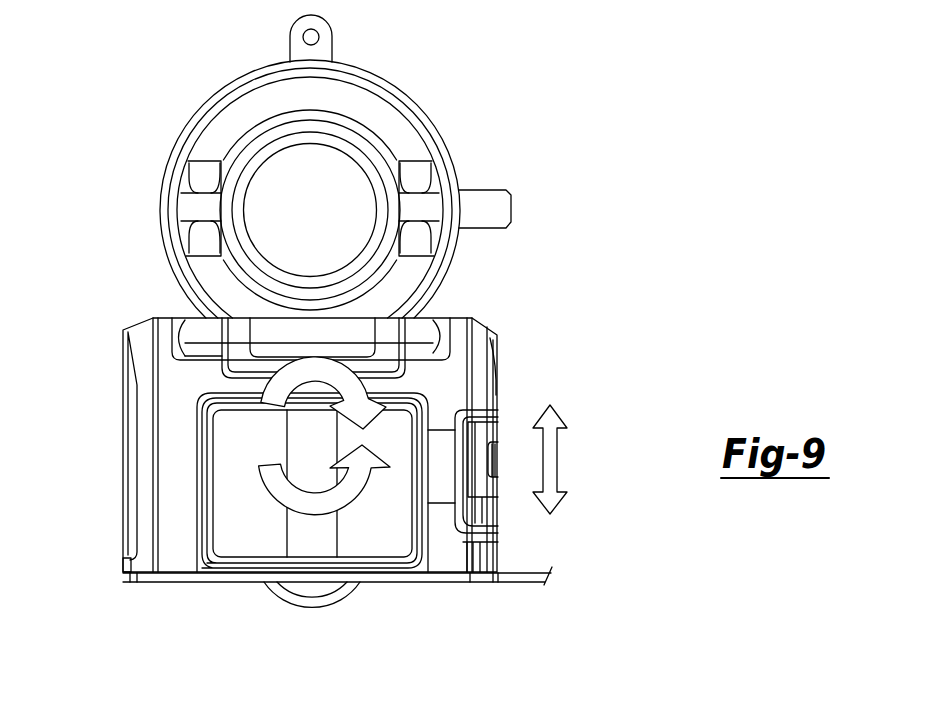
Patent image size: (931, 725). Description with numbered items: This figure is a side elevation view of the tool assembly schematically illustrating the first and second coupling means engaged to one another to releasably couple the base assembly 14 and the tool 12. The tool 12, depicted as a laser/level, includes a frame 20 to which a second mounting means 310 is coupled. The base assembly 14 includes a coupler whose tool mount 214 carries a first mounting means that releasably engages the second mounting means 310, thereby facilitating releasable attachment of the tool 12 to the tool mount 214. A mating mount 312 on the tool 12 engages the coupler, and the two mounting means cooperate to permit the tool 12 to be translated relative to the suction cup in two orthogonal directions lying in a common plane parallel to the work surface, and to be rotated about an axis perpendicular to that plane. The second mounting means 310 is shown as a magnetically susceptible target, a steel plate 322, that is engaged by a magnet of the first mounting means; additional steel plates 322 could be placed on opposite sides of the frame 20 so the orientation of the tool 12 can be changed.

The base assembly 14 is at (443, 131).
The tool 12 is at (121, 380).
The frame 20 is at (154, 478).
The mating mount 312 is at (246, 532).
The steel plate 322 is at (323, 527).
The second mounting means 310 is at (300, 537).
The tool mount 214 is at (252, 597).